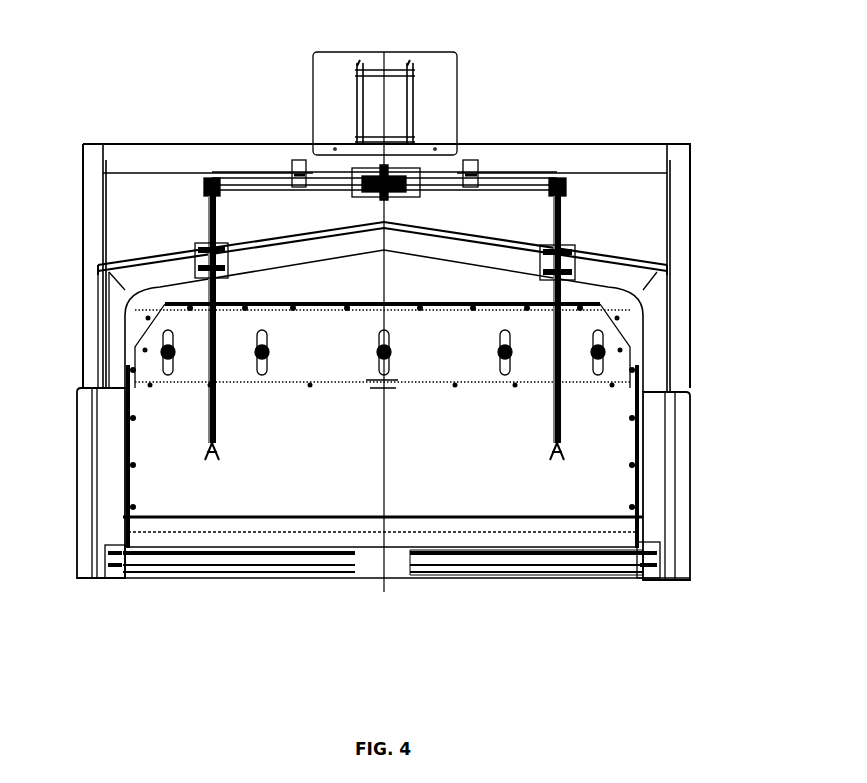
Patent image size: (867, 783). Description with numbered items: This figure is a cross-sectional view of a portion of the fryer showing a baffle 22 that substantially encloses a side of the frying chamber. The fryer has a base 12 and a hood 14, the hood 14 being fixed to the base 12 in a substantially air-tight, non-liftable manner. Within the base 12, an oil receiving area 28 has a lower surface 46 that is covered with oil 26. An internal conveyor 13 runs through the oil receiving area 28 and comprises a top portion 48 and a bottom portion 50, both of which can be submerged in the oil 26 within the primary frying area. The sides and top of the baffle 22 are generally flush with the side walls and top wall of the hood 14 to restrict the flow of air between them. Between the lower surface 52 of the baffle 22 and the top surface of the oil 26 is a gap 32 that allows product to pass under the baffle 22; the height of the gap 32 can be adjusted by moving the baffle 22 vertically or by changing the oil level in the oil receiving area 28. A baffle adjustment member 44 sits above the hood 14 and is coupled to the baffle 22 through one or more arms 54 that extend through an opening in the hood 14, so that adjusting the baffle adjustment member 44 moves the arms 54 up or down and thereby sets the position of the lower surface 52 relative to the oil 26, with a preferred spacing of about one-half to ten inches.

The base 12 is at (678, 423).
The internal conveyor 13 is at (610, 560).
The hood 14 is at (615, 262).
The baffle 22 is at (600, 485).
The oil 26 is at (395, 535).
The oil receiving area 28 is at (372, 560).
The gap 32 is at (615, 525).
The baffle adjustment member 44 is at (447, 52).
The lower surface 46 is at (442, 570).
The top portion 48 is at (195, 550).
The bottom portion 50 is at (278, 565).
The lower surface 52 is at (130, 520).
The arms 54 is at (205, 220).